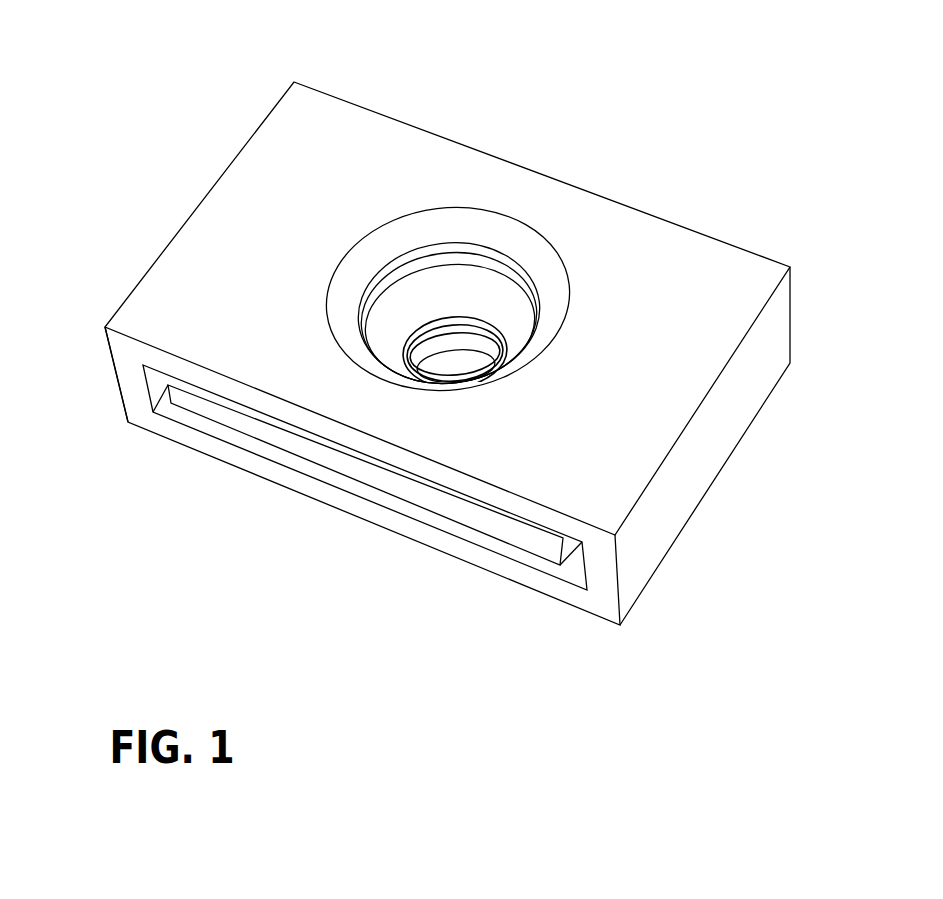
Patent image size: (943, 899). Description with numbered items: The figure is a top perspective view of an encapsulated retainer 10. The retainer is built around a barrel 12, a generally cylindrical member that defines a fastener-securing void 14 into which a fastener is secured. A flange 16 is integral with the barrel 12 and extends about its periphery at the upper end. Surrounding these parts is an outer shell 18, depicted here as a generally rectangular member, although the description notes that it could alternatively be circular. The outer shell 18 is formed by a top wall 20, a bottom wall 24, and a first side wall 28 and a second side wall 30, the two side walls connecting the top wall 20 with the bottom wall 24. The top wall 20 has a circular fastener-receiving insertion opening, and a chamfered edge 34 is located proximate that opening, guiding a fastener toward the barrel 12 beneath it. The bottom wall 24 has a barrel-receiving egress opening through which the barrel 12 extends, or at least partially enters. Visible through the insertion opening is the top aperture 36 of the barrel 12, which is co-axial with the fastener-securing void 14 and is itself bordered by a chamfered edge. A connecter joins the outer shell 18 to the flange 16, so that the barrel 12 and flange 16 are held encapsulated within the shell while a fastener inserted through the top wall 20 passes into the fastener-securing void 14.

The encapsulated retainer 10 is at (571, 33).
The barrel 12 is at (490, 335).
The fastener-securing void 14 is at (457, 367).
The flange 16 is at (212, 415).
The outer shell 18 is at (230, 165).
The top wall 20 is at (343, 143).
The bottom wall 24 is at (505, 578).
The first side wall 28 is at (112, 364).
The second side wall 30 is at (682, 510).
The chamfered edge 34 is at (427, 228).
The top aperture 36 is at (468, 233).